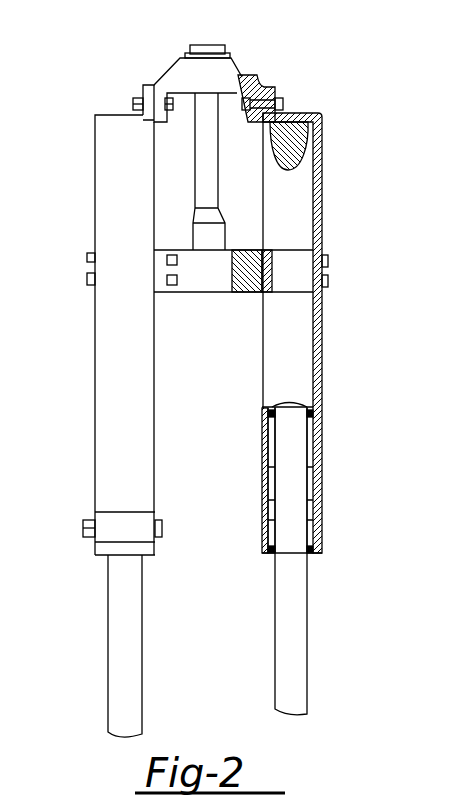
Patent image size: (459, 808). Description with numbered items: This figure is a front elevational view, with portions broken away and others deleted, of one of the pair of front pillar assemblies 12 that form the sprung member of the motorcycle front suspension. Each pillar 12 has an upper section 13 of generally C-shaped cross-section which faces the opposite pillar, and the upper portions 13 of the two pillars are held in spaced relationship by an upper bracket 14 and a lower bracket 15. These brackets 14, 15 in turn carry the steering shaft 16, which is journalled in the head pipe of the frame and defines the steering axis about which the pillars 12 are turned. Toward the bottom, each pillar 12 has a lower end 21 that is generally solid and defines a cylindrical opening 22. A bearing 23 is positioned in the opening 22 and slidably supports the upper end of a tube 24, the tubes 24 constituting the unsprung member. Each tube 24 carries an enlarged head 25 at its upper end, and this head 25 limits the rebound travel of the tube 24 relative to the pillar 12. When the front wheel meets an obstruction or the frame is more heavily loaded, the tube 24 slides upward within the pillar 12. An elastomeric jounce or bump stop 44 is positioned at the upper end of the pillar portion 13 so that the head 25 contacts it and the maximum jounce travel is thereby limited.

The front pillar assembly 12 is at (95, 317).
The upper section 13 is at (110, 192).
The upper bracket 14 is at (228, 68).
The lower bracket 15 is at (205, 280).
The steering shaft 16 is at (210, 166).
The lower end 21 is at (112, 453).
The cylindrical opening 22 is at (300, 532).
The bearing 23 is at (313, 440).
The tube 24 is at (108, 630).
The enlarged head 25 is at (283, 400).
The elastomeric bump stop 44 is at (303, 158).